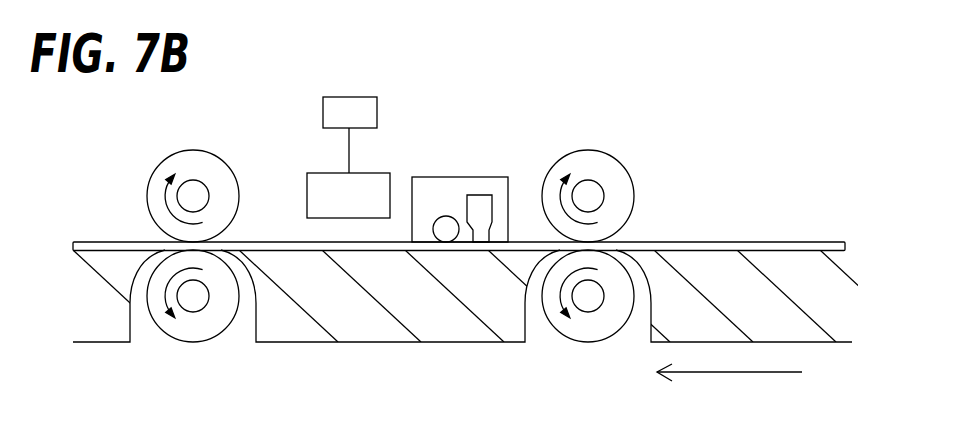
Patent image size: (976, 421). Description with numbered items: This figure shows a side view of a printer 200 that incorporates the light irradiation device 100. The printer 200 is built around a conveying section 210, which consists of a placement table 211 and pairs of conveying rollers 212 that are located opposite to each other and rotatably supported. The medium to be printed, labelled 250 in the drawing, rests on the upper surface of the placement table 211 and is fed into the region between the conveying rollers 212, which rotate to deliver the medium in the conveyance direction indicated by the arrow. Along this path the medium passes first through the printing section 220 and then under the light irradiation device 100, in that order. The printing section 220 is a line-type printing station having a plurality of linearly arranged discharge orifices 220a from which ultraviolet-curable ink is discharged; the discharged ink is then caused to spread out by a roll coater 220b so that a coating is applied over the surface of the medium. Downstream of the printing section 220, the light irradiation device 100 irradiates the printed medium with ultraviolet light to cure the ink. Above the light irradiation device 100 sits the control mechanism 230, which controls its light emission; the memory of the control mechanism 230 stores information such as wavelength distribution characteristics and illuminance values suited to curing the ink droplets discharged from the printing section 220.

The light irradiation device 100 is at (318, 193).
The printer 200 is at (763, 70).
The conveying section 210 is at (683, 178).
The placement table 211 is at (649, 266).
The conveying rollers 212 is at (612, 200).
The printing section 220 is at (435, 192).
The discharge orifices 220a is at (488, 195).
The roll coater 220b is at (444, 216).
The control mechanism 230 is at (367, 115).
The recording medium 250 is at (841, 240).